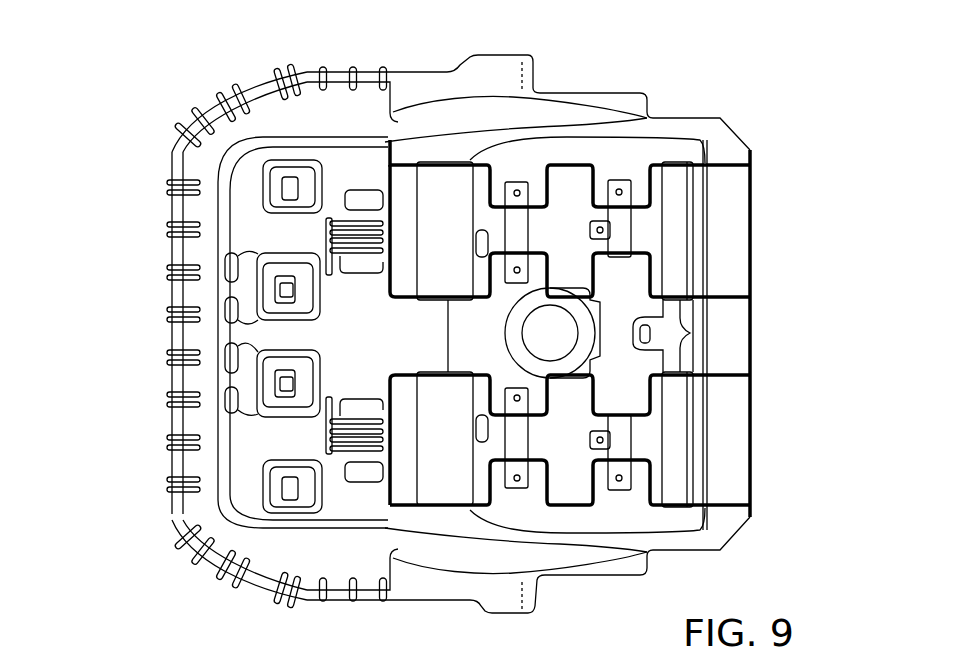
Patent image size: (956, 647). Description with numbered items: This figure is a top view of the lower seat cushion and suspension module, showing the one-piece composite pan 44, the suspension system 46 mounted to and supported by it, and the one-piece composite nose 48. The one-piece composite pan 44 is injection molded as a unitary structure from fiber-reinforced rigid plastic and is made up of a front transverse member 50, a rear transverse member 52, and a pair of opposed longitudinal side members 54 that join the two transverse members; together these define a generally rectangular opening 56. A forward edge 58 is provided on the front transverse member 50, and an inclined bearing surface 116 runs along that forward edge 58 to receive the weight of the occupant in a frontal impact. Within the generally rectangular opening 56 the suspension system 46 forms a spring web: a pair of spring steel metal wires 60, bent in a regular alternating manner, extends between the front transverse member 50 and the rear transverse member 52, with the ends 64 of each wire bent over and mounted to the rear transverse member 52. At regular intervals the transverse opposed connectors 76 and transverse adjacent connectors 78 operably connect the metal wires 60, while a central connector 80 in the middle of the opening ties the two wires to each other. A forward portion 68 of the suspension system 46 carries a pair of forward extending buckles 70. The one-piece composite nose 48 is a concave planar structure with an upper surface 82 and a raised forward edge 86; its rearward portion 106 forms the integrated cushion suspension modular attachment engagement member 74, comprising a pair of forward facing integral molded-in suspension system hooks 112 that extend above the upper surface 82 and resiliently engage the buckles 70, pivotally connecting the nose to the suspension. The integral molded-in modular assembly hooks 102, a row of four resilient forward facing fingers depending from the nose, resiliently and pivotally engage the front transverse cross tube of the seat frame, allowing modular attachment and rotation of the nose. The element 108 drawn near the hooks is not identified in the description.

The one-piece composite pan 44 is at (717, 530).
The suspension system 46 is at (653, 267).
The one-piece composite nose 48 is at (230, 93).
The front transverse member 50 is at (430, 347).
The rear transverse member 52 is at (725, 422).
The opposed longitudinal side members 54 is at (572, 110).
The generally rectangular opening 56 is at (703, 338).
The forward edge 58 is at (403, 547).
The metal wires 60 is at (640, 197).
The ends 64 is at (750, 168).
The forward portion 68 is at (350, 188).
The forward extending buckles 70 is at (340, 195).
The integrated cushion suspension modular attachment engagement member 74 is at (340, 233).
The transverse opposed connectors 76 is at (433, 197).
The transverse adjacent connectors 78 is at (520, 230).
The central connector 80 is at (590, 322).
The upper surface 82 is at (198, 552).
The raised forward edge 86 is at (180, 399).
The integral molded-in modular assembly hooks 102 is at (265, 181).
The rearward portion 106 is at (360, 328).
The spring clip 108 is at (354, 247).
The forward facing integral molded-in suspension system hooks 112 is at (323, 210).
The inclined bearing surface 116 is at (433, 307).